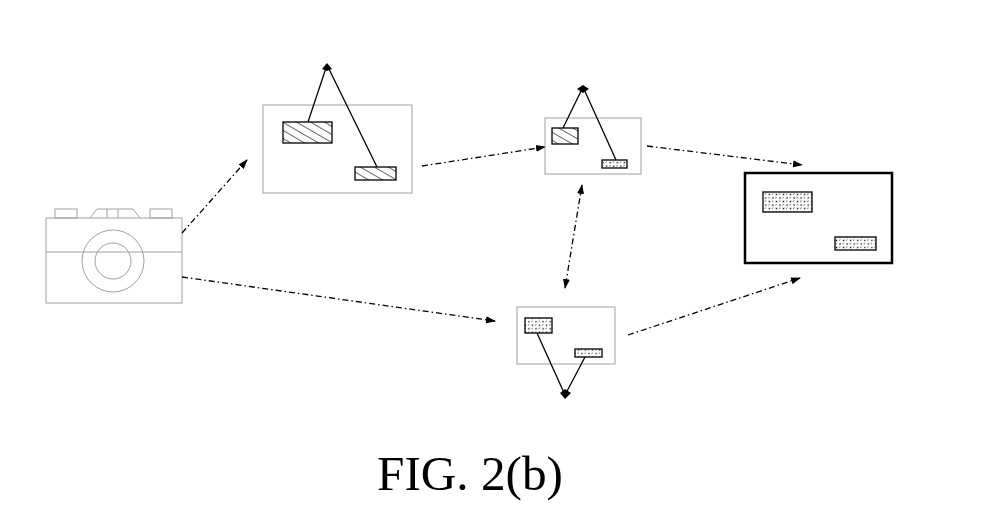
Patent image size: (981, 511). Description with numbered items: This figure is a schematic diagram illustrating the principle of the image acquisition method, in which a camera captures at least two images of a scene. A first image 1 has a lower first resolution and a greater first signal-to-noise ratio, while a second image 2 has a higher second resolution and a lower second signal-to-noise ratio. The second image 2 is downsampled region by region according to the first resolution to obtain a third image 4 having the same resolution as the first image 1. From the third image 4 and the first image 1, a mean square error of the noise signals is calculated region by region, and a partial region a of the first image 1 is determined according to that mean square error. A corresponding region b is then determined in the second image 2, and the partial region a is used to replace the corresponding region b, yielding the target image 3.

The first image 1 is at (566, 335).
The second image 2 is at (337, 149).
The target image 3 is at (818, 218).
The third image 4 is at (593, 146).
The partial region a is at (561, 380).
The corresponding region b is at (462, 105).
The element camera is at (114, 256).